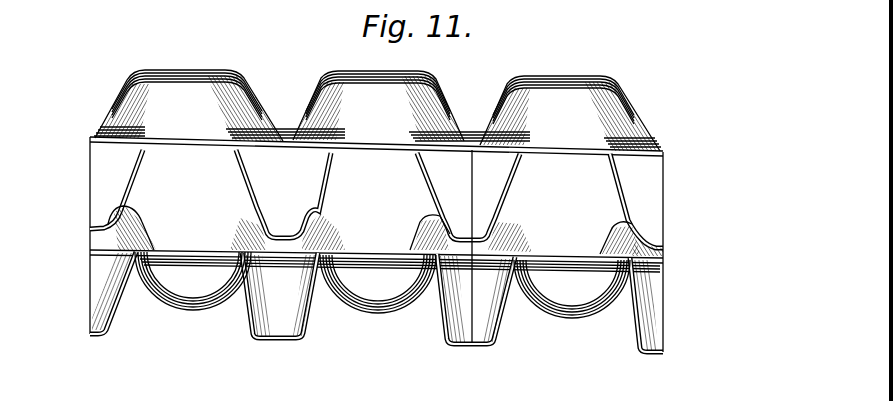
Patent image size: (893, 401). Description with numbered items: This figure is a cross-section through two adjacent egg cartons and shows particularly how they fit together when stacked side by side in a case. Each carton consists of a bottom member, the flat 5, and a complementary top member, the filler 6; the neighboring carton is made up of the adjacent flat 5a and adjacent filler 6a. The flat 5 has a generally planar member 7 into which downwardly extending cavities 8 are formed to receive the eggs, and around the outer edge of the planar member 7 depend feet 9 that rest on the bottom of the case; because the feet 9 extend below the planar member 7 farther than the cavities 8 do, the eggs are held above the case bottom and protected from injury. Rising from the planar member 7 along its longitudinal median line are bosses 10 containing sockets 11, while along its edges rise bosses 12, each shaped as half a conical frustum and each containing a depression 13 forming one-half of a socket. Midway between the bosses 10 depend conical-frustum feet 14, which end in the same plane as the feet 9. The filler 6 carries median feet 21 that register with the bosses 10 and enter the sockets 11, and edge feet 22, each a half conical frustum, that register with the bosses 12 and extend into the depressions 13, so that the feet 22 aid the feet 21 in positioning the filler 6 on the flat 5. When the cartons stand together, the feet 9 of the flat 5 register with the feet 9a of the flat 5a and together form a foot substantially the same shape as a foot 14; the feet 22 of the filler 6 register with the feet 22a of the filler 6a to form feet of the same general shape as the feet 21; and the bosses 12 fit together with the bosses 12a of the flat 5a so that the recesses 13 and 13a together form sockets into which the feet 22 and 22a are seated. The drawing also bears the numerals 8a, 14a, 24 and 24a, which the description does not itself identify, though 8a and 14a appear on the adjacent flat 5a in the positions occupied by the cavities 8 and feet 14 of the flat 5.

The flat 5 is at (240, 323).
The adjacent flat 5a is at (556, 335).
The filler 6 is at (330, 66).
The adjacent filler 6a is at (572, 76).
The planar member 7 is at (193, 248).
The cavities 8 is at (173, 305).
The hemispherical cup 8a is at (587, 318).
The feet 9 is at (105, 298).
The feet of adjacent flat 9a is at (500, 327).
The bosses 10 is at (323, 216).
The sockets 11 is at (668, 260).
The bosses 12 is at (128, 210).
The bosses of adjacent flat 12a is at (508, 232).
The depression 13 is at (450, 207).
The recess of adjacent boss 13a is at (512, 246).
The feet 14 is at (300, 330).
The foot wall 14a is at (656, 318).
The feet 21 is at (241, 167).
The feet 22 is at (105, 167).
The feet of adjacent filler 22a is at (505, 178).
The rounded rim of dome 24 is at (313, 78).
The rounded rim of dome 24a is at (626, 90).